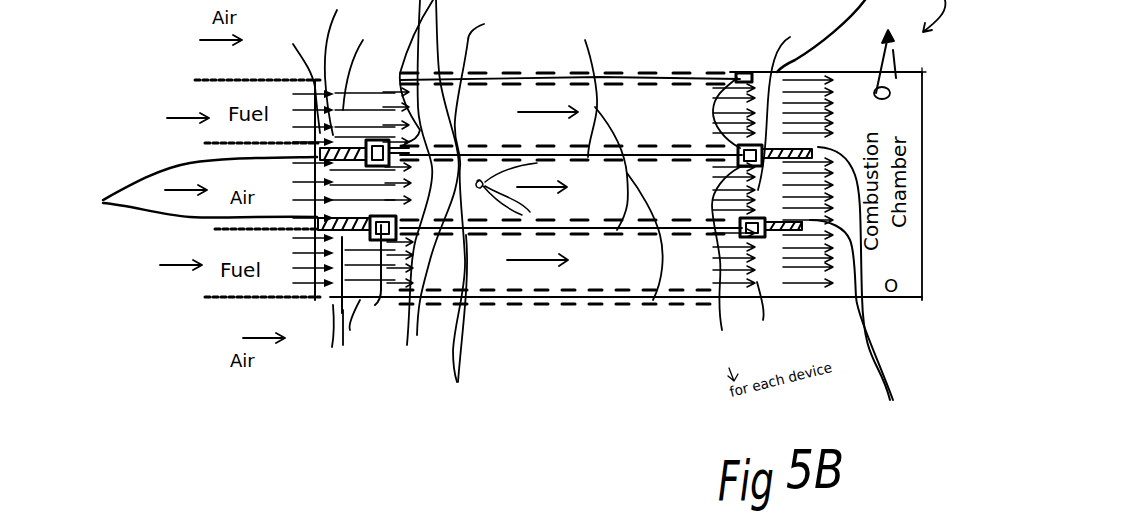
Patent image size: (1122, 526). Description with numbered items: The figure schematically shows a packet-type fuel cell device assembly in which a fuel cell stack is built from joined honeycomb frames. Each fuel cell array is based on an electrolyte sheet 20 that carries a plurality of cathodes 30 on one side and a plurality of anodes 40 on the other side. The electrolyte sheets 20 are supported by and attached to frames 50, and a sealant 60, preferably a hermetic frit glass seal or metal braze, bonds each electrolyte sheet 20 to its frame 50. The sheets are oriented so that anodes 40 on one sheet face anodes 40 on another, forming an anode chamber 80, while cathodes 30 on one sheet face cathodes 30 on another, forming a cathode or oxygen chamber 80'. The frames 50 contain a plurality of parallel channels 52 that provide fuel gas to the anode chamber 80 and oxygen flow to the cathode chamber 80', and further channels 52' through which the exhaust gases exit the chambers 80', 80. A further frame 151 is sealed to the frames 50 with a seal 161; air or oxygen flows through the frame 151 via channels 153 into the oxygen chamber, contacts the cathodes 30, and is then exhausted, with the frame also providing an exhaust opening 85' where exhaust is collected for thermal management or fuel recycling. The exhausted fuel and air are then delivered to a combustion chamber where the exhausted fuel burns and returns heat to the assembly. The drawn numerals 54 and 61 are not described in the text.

The electrolyte sheet 20 is at (530, 74).
The cathodes 30 is at (468, 189).
The anodes 40 is at (480, 207).
The frame 50 is at (297, 443).
The parallel channels 52 is at (344, 190).
The exhaust channels 52' is at (792, 189).
The air passage 54 is at (368, 64).
The sealant 60 is at (750, 73).
The injector inlet channel 61 is at (193, 190).
The anode chamber 80 is at (684, 193).
The cathode chamber 80' is at (563, 297).
The exhaust opening 85' is at (837, 68).
The frame 151 is at (260, 212).
The channels 153 is at (322, 183).
The seal 161 is at (862, 294).